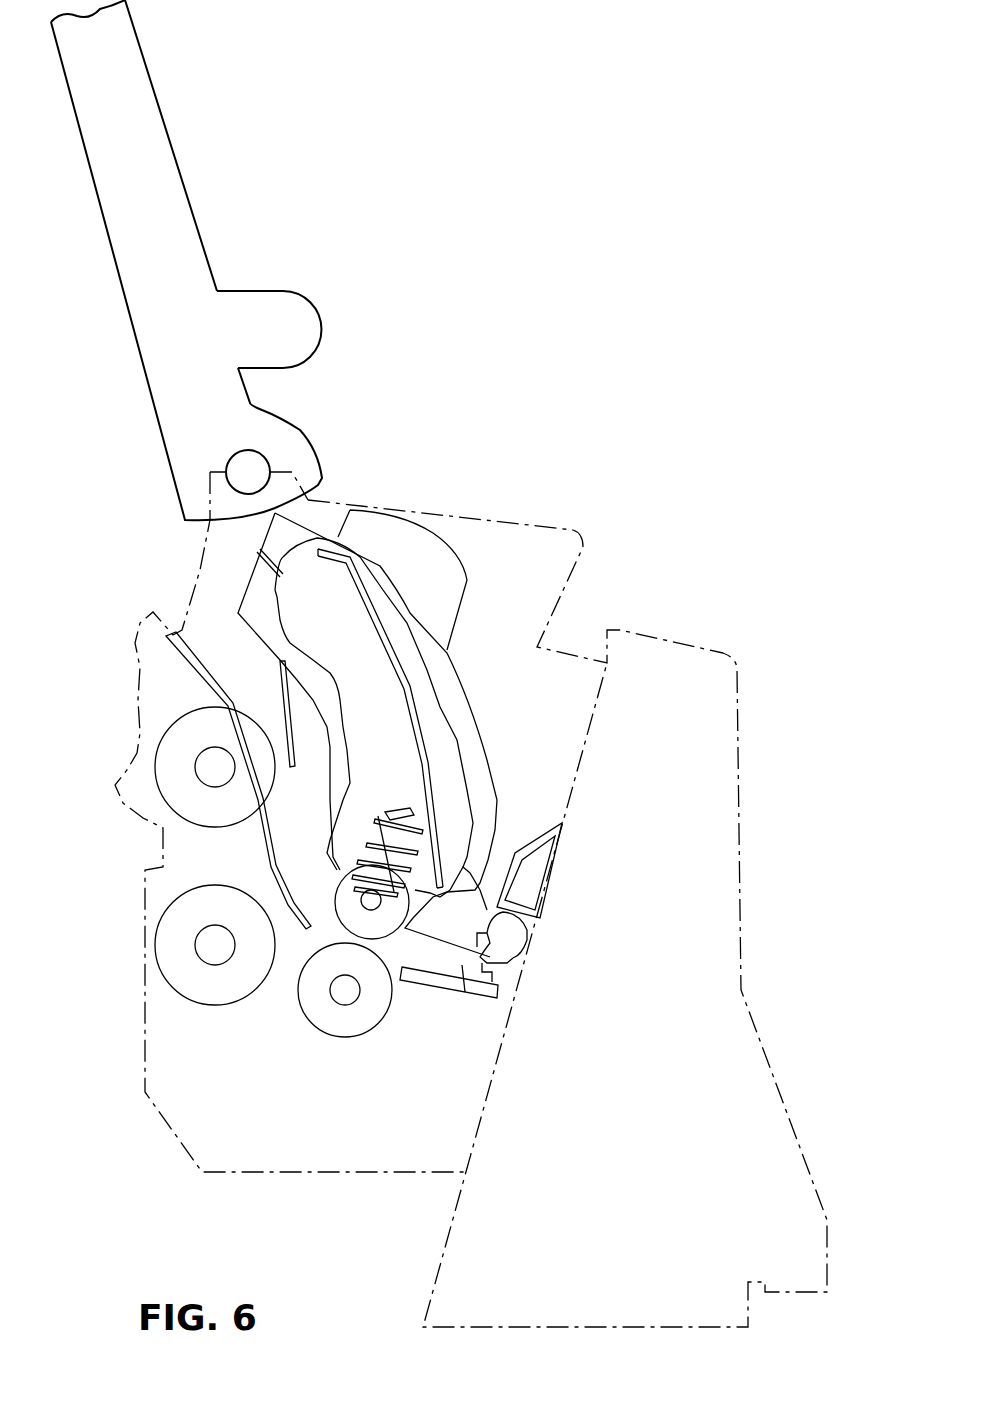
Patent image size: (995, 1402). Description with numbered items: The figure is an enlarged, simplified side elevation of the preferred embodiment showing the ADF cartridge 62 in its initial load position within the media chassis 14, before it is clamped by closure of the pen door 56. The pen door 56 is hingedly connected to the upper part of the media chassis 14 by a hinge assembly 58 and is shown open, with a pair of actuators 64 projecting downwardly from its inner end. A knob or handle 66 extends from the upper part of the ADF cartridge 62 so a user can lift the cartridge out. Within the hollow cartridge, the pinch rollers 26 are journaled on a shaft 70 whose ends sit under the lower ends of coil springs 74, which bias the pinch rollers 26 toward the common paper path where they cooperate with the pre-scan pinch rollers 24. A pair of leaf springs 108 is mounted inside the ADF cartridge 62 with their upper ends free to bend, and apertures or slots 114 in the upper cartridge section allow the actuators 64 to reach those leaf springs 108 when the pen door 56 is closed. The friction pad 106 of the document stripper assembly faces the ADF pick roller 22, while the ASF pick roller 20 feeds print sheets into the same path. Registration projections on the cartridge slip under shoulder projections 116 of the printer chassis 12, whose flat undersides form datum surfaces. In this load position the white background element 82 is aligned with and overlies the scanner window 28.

The printer chassis 12 is at (775, 1077).
The media chassis 14 is at (182, 1157).
The ASF pick roller 20 is at (205, 1005).
The ADF pick roller 22 is at (170, 736).
The pre-scan pinch rollers 24 is at (325, 1037).
The pinch rollers 26 is at (330, 903).
The scanner window 28 is at (423, 987).
The pen door 56 is at (155, 88).
The hinge assembly 58 is at (233, 455).
The ADF cartridge 62 is at (483, 733).
The actuators 64 is at (317, 333).
The knob or handle 66 is at (460, 560).
The shaft 70 is at (360, 897).
The coil springs 74 is at (377, 840).
The white background element 82 is at (465, 992).
The friction pad 106 is at (280, 690).
The leaf springs 108 is at (410, 685).
The apertures or slots 114 is at (520, 933).
The shoulder projections 116 is at (545, 822).